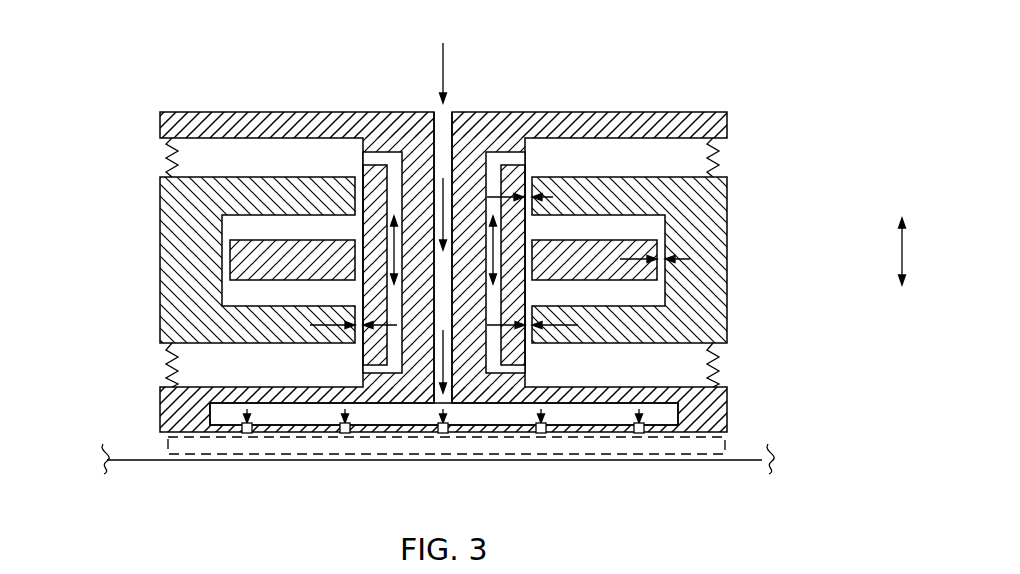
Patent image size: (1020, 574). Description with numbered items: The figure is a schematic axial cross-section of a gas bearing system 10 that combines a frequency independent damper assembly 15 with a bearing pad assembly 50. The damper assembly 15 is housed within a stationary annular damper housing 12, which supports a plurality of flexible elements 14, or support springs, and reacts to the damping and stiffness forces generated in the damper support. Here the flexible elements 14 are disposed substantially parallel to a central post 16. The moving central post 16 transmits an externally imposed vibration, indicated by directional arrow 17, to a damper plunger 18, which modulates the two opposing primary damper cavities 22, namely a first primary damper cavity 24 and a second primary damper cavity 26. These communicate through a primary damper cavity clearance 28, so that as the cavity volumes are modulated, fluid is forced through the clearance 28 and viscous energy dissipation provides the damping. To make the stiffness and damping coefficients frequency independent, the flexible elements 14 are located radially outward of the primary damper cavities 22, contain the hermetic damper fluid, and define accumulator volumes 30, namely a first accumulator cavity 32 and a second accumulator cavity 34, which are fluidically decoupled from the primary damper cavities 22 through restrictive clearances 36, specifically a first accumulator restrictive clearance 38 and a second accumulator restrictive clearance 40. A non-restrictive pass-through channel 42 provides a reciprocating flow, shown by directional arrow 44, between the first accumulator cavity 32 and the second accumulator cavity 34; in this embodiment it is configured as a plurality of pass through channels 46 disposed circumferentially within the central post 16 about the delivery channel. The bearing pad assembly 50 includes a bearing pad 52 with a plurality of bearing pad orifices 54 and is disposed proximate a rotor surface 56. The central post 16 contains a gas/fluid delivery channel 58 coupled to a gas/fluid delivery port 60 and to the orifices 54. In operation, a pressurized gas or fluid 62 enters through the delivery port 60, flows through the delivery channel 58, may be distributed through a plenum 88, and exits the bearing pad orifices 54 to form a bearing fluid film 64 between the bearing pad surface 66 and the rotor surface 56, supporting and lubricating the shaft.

The bearing system 10 is at (797, 45).
The stationary annular damper housing 12 is at (445, 257).
The flexible elements 14 is at (713, 160).
The damper assembly 15 is at (803, 237).
The central post 16 is at (436, 167).
The directional arrow 17 is at (900, 265).
The damper plunger 18 is at (237, 248).
The primary damper cavities 22 is at (446, 257).
The first primary damper cavity 24 is at (446, 257).
The second primary damper cavity 26 is at (650, 292).
The primary damper cavity clearance 28 is at (690, 259).
The accumulator volumes 30 is at (425, 250).
The first accumulator cavity 32 is at (215, 155).
The second accumulator cavity 34 is at (197, 380).
The restrictive clearances 36 is at (544, 335).
The first accumulator restrictive clearance 38 is at (553, 197).
The second accumulator restrictive clearance 40 is at (578, 325).
The non-restrictive pass-through channel 42 is at (327, 203).
The directional arrow 44 is at (390, 254).
The pass through channels 46 is at (327, 203).
The bearing pad assembly 50 is at (805, 435).
The bearing pad 52 is at (425, 401).
The bearing pad orifices 54 is at (348, 433).
The rotor surface 56 is at (135, 460).
The gas/fluid delivery channel 58 is at (375, 152).
The gas/fluid delivery port 60 is at (450, 113).
The pressurized gas or fluid 62 is at (443, 75).
The bearing fluid film 64 is at (332, 447).
The bearing pad surface 66 is at (683, 430).
The plenum 88 is at (446, 475).